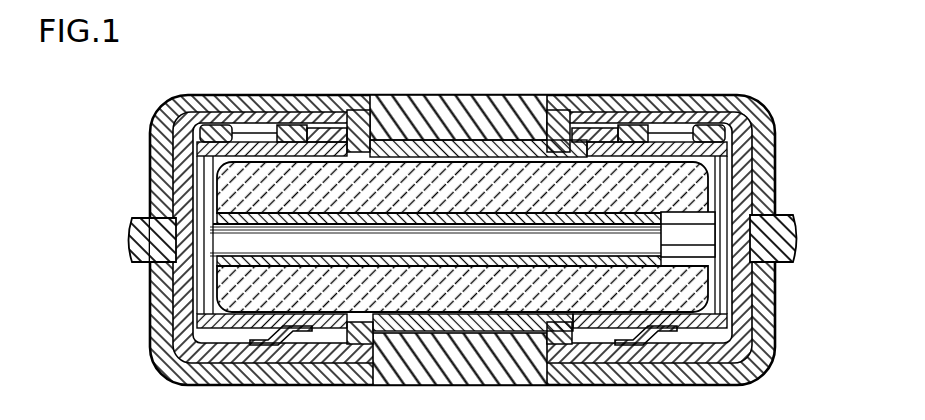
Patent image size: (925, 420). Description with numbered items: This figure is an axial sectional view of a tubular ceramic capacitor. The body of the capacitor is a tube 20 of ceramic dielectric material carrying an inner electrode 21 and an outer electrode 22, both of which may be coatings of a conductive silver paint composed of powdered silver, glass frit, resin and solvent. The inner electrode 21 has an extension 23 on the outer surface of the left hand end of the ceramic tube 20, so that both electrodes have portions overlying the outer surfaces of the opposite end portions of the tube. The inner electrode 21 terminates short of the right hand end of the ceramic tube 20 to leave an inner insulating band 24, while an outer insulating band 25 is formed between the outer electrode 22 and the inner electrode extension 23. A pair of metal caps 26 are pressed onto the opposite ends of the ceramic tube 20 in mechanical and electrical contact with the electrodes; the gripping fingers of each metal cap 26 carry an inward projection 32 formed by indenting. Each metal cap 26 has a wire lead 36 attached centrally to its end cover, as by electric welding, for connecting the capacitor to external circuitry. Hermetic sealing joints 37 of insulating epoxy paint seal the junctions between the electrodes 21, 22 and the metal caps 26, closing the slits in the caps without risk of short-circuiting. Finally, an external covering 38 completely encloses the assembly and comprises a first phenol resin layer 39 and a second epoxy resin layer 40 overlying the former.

The tube 20 is at (440, 183).
The inner electrode 21 is at (648, 212).
The outer electrode 22 is at (594, 156).
The extension 23 is at (323, 127).
The inner insulating band 24 is at (700, 257).
The outer insulating band 25 is at (377, 106).
The metal cap 26 is at (279, 124).
The inward projection 32 is at (268, 335).
The wire lead 36 is at (137, 222).
The hermetic sealing joint 37 is at (351, 120).
The external covering 38 is at (181, 98).
The phenol resin layer 39 is at (201, 116).
The epoxy resin layer 40 is at (241, 131).